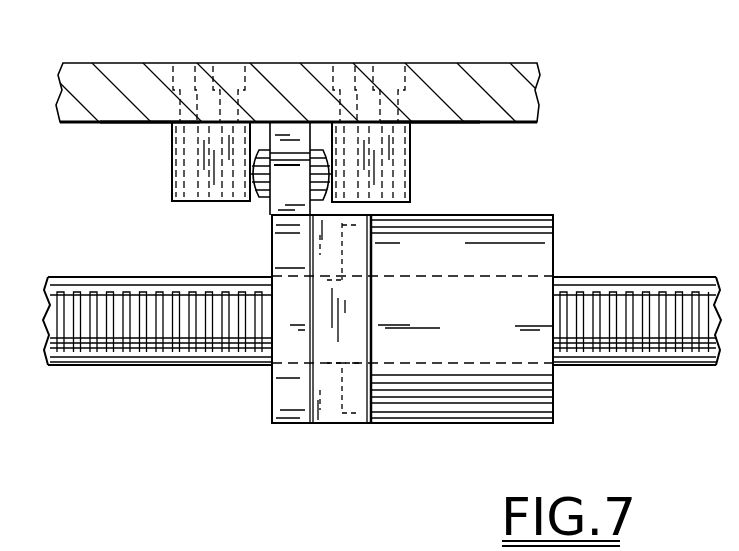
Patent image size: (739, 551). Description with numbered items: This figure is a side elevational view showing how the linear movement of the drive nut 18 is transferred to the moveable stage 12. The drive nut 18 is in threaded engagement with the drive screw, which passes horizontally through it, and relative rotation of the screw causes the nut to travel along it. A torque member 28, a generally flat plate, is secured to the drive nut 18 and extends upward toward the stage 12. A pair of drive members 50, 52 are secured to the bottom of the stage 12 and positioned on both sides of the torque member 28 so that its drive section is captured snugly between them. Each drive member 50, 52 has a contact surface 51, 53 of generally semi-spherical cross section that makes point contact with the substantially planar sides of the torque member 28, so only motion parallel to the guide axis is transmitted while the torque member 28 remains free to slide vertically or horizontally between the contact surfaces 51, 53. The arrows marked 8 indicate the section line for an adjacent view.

The moveable stage 12 is at (155, 63).
The torque member 28 is at (300, 122).
The mounting surface 8 is at (423, 112).
The drive member 50 is at (208, 202).
The contact surface 51 is at (261, 203).
The drive member 52 is at (389, 207).
The contact surface 53 is at (318, 168).
The drive nut 18 is at (438, 425).